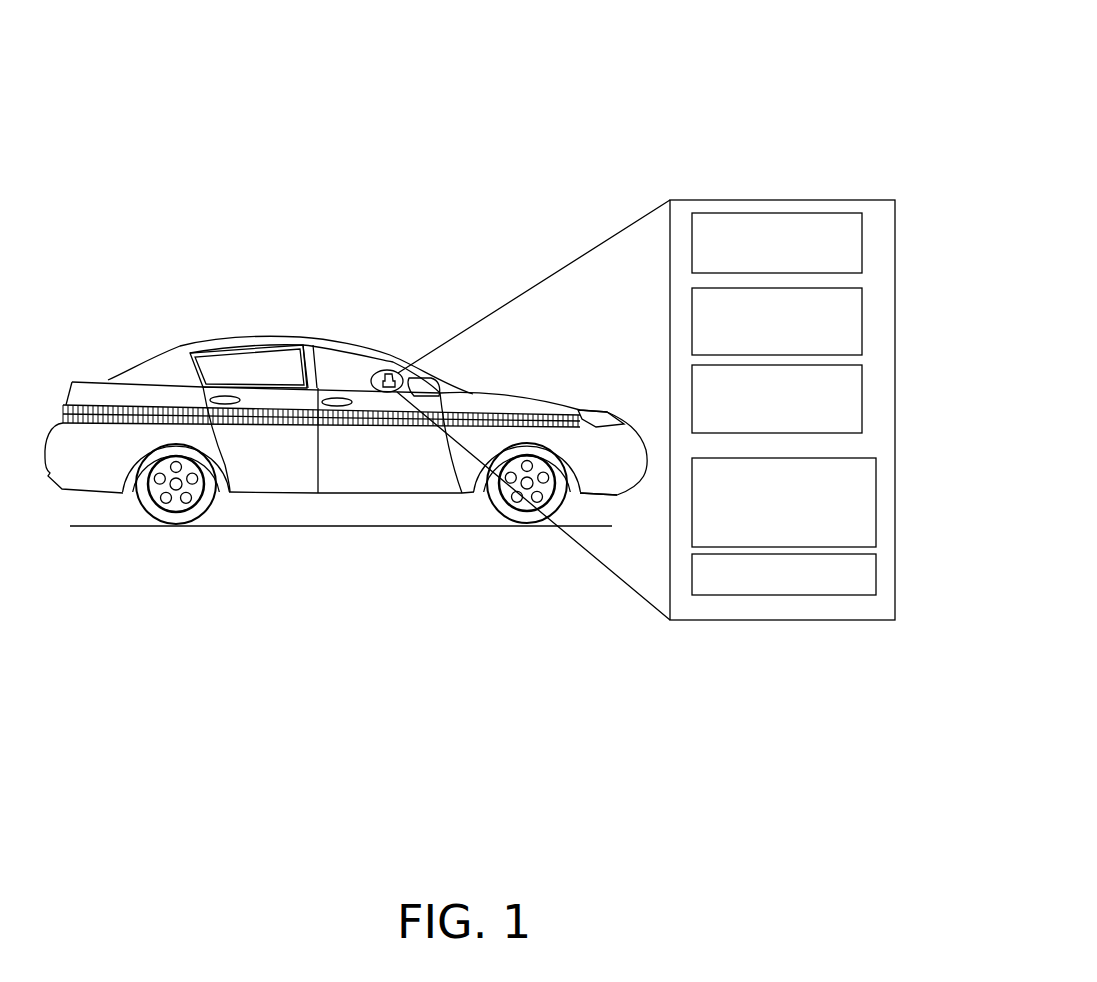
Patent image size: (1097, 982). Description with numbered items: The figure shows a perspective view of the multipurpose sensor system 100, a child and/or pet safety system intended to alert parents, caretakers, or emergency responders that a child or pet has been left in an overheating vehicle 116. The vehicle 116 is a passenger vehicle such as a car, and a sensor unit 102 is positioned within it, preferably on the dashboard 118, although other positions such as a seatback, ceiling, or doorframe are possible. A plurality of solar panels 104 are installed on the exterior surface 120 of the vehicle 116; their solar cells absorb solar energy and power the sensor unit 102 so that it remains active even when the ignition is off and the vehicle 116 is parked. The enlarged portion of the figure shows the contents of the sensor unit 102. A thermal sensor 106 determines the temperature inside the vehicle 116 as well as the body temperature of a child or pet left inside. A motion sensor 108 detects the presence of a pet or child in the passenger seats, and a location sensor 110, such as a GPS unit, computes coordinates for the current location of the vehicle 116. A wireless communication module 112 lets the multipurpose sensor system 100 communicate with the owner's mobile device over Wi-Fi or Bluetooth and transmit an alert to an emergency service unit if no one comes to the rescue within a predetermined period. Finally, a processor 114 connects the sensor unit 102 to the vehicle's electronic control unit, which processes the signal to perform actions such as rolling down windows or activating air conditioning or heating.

The multipurpose sensor system 100 is at (158, 232).
The sensor unit 102 is at (388, 372).
The solar panels 104 is at (347, 420).
The thermal sensor 106 is at (862, 242).
The motion sensor 108 is at (862, 327).
The location sensor 110 is at (862, 392).
The wireless communication module 112 is at (876, 505).
The processor 114 is at (876, 577).
The vehicle 116 is at (277, 336).
The dashboard 118 is at (442, 420).
The exterior surface 120 is at (265, 462).